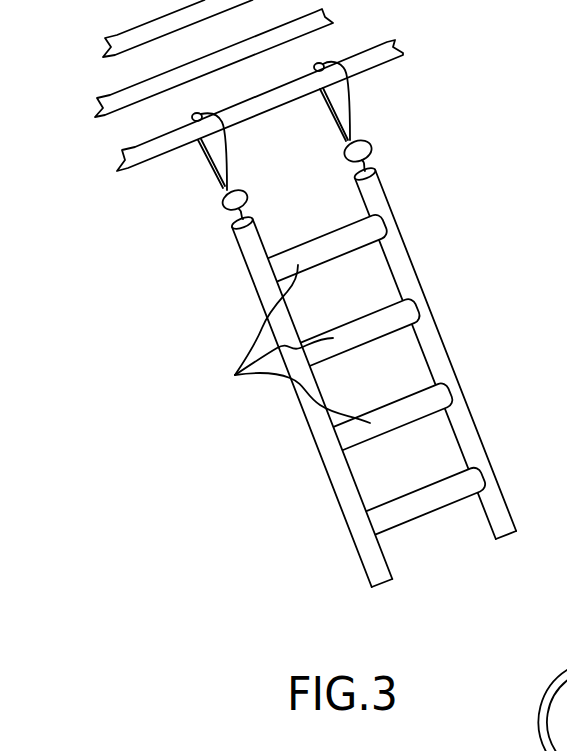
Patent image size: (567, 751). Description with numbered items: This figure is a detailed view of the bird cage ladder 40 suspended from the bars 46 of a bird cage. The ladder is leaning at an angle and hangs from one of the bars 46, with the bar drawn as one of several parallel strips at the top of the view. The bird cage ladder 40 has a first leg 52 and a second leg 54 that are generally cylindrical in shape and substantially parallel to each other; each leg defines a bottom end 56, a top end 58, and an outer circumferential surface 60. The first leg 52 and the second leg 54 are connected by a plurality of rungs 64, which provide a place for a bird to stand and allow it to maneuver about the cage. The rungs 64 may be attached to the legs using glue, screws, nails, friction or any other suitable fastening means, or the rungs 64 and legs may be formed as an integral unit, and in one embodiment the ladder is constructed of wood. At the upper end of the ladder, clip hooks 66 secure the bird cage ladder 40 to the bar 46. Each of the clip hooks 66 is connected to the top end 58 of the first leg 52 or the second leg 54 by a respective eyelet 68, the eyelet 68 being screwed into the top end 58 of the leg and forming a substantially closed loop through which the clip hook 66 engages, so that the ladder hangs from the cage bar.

The bird cage ladder 40 is at (369, 392).
The bars 46 is at (132, 104).
The first leg 52 is at (300, 408).
The second leg 54 is at (443, 335).
The bottom end 56 is at (508, 541).
The top end 58 is at (237, 229).
The outer circumferential surface 60 is at (345, 492).
The rungs 64 is at (364, 377).
The clip hooks 66 is at (202, 142).
The eyelets 68 is at (220, 214).